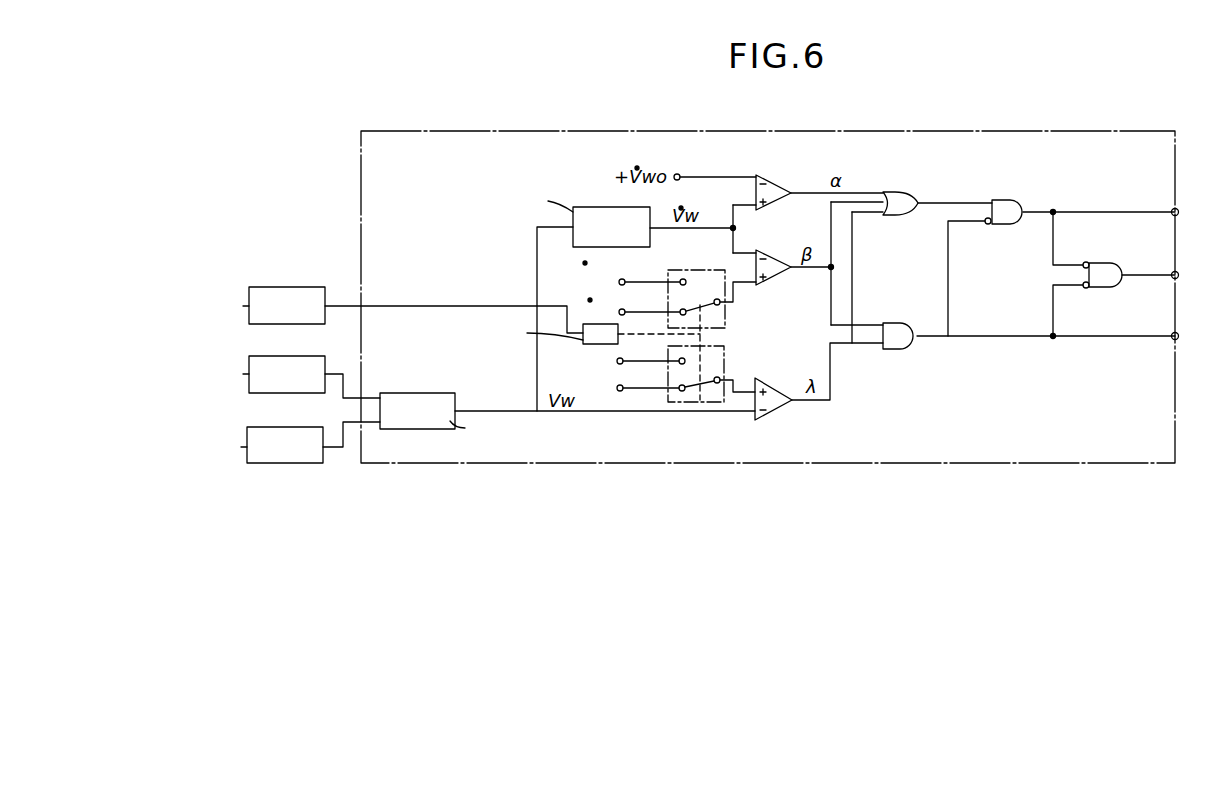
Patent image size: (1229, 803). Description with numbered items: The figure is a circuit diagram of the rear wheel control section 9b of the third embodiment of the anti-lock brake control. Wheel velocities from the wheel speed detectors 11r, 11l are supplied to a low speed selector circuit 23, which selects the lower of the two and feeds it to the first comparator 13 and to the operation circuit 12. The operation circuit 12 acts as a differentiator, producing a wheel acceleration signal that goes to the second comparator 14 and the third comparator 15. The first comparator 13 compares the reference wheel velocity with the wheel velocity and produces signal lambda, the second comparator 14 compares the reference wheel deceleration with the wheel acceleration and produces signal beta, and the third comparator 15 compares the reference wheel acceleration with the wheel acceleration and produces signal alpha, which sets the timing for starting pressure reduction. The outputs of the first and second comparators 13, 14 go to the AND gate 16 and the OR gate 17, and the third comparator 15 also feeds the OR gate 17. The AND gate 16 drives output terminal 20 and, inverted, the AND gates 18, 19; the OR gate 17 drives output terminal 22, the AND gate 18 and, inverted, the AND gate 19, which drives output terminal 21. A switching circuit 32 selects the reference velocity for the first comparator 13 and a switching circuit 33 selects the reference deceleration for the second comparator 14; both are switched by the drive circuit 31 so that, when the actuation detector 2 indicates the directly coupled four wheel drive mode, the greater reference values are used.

The rear wheel control section 9b is at (953, 131).
The actuation detector 2 is at (284, 293).
The wheel speed detector 11r is at (283, 363).
The wheel speed detector 11l is at (283, 434).
The low speed selector circuit 23 is at (414, 399).
The operation circuit 12 is at (590, 212).
The drive circuit 31 is at (583, 341).
The switching circuit 33 is at (725, 318).
The switching circuit 32 is at (724, 352).
The third comparator 15 is at (770, 180).
The second comparator 14 is at (770, 255).
The first comparator 13 is at (770, 380).
The OR gate 17 is at (894, 191).
The AND gate 16 is at (894, 325).
The AND gate 18 is at (1002, 191).
The AND gate 19 is at (1104, 249).
The output terminal 22 is at (1179, 212).
The output terminal 21 is at (1179, 275).
The output terminal 20 is at (1179, 336).